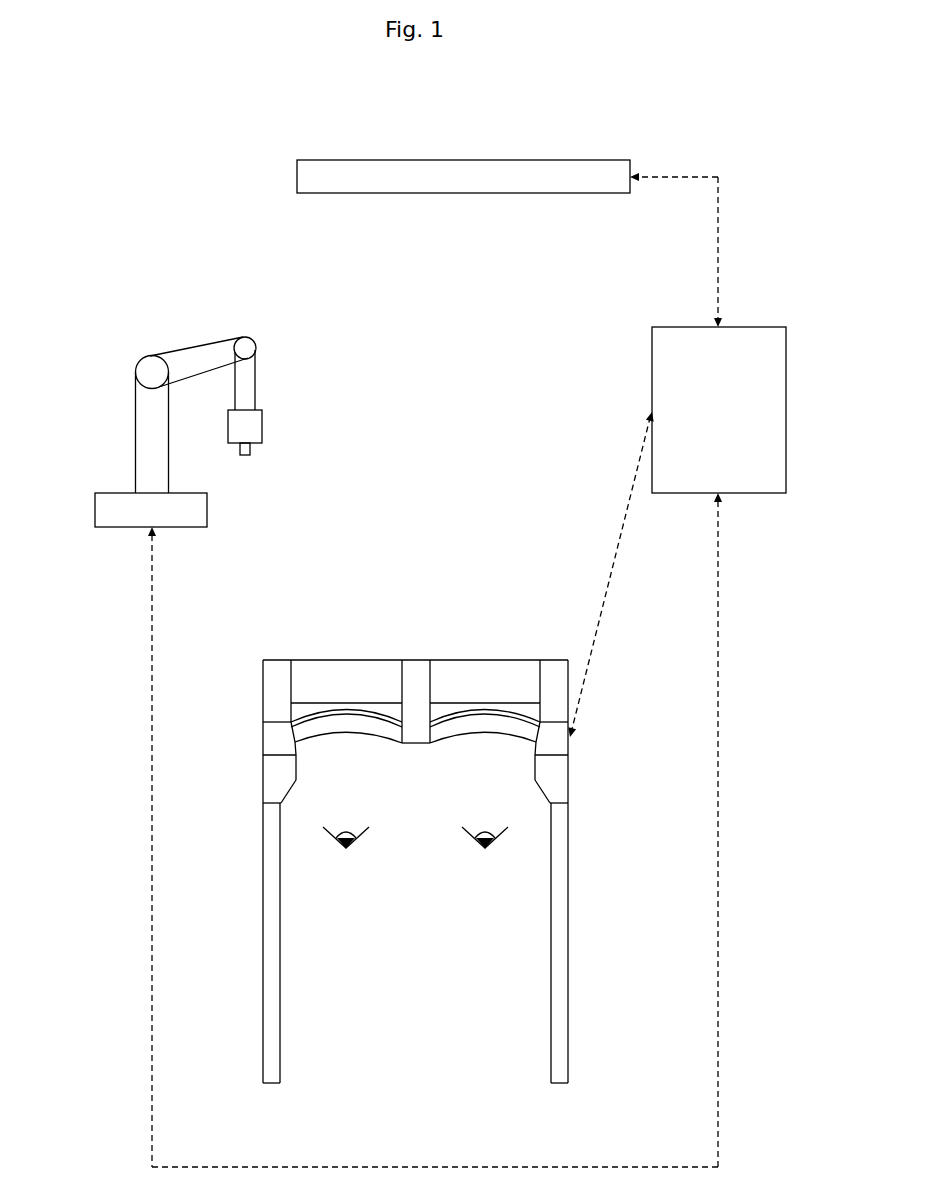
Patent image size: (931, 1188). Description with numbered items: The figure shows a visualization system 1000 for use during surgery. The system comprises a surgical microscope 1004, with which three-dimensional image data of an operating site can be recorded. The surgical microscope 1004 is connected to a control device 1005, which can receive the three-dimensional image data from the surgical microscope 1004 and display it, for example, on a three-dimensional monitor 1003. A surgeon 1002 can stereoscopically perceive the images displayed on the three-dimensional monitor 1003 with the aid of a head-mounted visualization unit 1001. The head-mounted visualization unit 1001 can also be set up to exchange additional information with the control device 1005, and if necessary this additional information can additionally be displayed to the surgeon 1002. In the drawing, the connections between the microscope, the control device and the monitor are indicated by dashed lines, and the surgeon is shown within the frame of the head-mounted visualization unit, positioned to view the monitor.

The visualization system 1000 is at (102, 124).
The head-mounted visualization unit 1001 is at (280, 943).
The surgeon 1002 is at (487, 872).
The 3D monitor 1003 is at (297, 177).
The surgical microscope 1004 is at (130, 435).
The control device 1005 is at (787, 410).